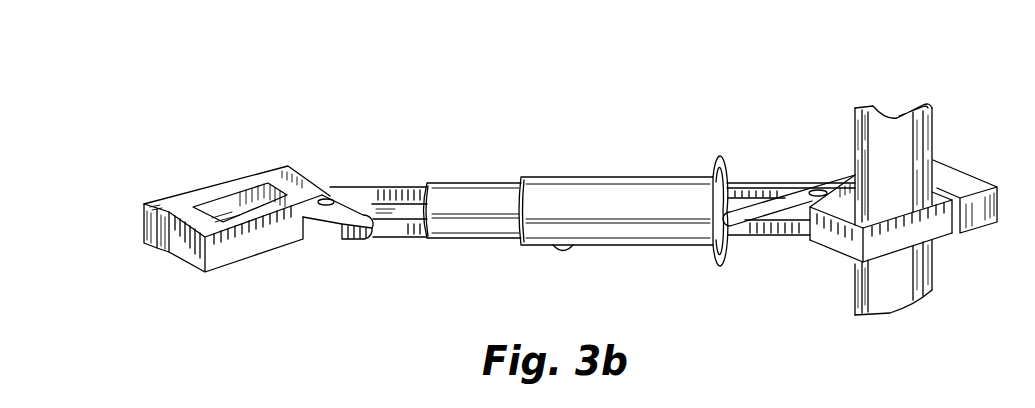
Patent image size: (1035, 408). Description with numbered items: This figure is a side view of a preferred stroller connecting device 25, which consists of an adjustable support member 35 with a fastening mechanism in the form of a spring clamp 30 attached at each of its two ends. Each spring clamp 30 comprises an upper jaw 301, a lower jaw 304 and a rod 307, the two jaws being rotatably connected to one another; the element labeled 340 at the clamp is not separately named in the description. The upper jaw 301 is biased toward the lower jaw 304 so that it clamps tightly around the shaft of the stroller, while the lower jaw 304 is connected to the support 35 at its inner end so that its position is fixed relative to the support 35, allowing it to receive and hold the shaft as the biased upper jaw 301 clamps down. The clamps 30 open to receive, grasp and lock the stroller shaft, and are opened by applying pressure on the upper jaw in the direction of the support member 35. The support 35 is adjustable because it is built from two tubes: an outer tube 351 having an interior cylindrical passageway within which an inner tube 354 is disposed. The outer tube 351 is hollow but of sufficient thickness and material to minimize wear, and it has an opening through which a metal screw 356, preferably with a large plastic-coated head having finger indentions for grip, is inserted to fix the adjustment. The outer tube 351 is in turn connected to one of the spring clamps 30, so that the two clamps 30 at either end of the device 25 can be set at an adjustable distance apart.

The connecting device 25 is at (579, 182).
The spring clamp 30 is at (579, 185).
The upper jaw 301 is at (245, 263).
The lower jaw 304 is at (155, 253).
The rod 307 is at (342, 167).
The tongue 340 is at (355, 234).
The support member 35 is at (592, 222).
The outer tube 351 is at (636, 192).
The inner tube 354 is at (482, 181).
The metal screw 356 is at (615, 263).